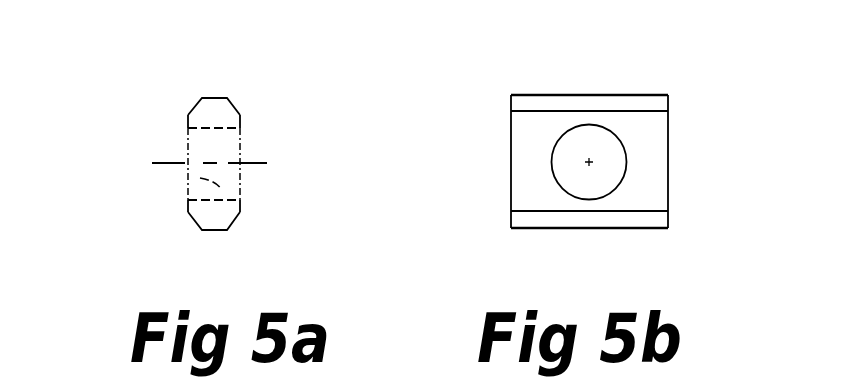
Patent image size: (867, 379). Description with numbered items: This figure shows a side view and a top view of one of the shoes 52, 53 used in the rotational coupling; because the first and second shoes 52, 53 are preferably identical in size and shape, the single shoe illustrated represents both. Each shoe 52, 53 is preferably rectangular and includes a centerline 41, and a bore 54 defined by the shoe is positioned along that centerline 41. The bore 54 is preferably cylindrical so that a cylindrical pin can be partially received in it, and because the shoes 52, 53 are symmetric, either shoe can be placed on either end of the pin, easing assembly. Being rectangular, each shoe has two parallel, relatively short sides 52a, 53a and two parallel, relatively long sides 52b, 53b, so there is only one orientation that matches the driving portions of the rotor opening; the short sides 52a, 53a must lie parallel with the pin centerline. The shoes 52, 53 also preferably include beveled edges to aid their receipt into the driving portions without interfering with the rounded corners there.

In FIG. 5A, the first shoe 52 is at (209, 146).
In FIG. 5B, the first shoe 52 is at (581, 147).
In FIG. 5A, the second shoe 53 is at (209, 146).
In FIG. 5B, the second shoe 53 is at (581, 147).
In FIG. 5A, the relatively short sides 52a is at (150, 167).
In FIG. 5B, the relatively short sides 52a is at (581, 161).
In FIG. 5A, the relatively short sides 53a is at (215, 97).
In FIG. 5B, the relatively short sides 53a is at (511, 163).
In FIG. 5A, the relatively long sides 52b is at (203, 166).
In FIG. 5B, the relatively long sides 52b is at (523, 164).
In FIG. 5A, the relatively long sides 53b is at (188, 140).
In FIG. 5B, the relatively long sides 53b is at (530, 94).
In FIG. 5A, the centerline 41 is at (165, 158).
In FIG. 5A, the bore 54 is at (198, 178).
In FIG. 5B, the bore 54 is at (577, 127).